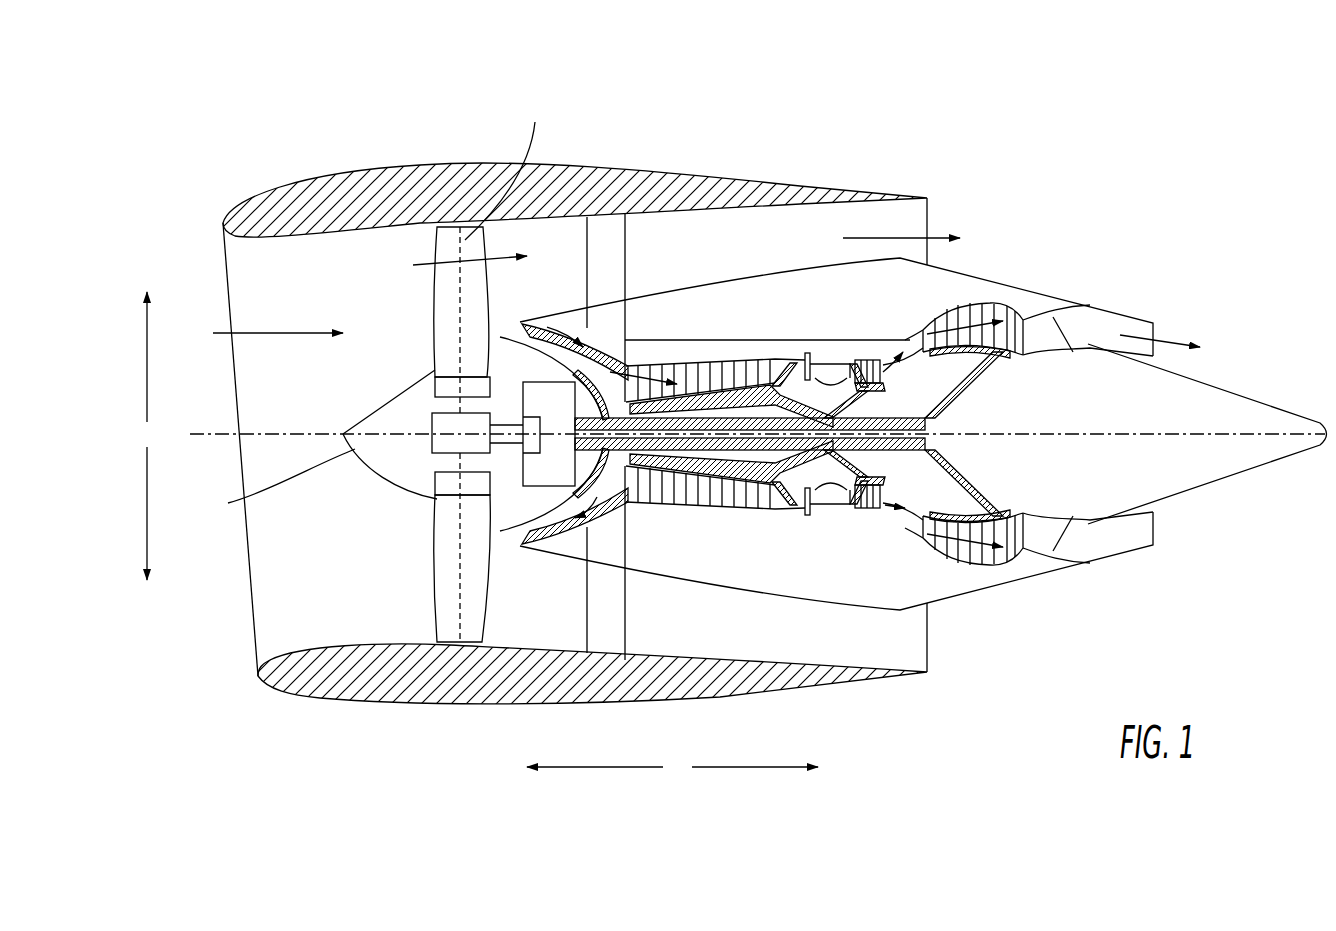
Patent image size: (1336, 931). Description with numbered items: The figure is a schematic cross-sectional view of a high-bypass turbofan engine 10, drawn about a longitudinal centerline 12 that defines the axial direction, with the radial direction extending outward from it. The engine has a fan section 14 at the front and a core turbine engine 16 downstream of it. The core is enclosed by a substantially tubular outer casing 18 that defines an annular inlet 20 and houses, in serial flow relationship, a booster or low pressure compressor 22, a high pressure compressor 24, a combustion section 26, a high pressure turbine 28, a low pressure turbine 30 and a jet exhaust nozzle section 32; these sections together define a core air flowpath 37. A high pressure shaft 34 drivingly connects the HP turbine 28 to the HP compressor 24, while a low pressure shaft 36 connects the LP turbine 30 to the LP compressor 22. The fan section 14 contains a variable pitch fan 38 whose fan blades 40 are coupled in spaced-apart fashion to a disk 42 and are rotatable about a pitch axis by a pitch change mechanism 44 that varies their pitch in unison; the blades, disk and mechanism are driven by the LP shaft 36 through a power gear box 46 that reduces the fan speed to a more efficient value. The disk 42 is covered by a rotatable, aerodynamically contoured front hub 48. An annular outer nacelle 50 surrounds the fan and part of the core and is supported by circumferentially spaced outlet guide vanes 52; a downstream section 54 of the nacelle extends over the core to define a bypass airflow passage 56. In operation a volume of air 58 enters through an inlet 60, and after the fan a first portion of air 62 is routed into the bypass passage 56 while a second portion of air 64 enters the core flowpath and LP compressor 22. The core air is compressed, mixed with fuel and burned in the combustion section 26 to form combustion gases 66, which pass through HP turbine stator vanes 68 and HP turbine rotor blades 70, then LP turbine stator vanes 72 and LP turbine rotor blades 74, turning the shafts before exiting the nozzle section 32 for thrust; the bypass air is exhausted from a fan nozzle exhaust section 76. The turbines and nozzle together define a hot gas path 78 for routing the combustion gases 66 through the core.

The turbofan engine 10 is at (1070, 178).
The longitudinal centerline 12 is at (1090, 432).
The fan section 14 is at (393, 250).
The core turbine engine 16 is at (745, 323).
The outer casing 18 is at (785, 598).
The annular inlet 20 is at (535, 537).
The low pressure compressor 22 is at (575, 492).
The high pressure compressor 24 is at (653, 487).
The combustion section 26 is at (825, 497).
The high pressure turbine 28 is at (923, 502).
The low pressure turbine 30 is at (1008, 558).
The jet exhaust nozzle section 32 is at (1068, 540).
The high pressure shaft 34 is at (823, 408).
The low pressure shaft 36 is at (923, 413).
The core air flowpath 37 is at (615, 493).
The variable pitch fan 38 is at (400, 488).
The fan blades 40 is at (433, 583).
The disk 42 is at (447, 387).
The pitch change mechanism 44 is at (430, 414).
The power gear box 46 is at (557, 398).
The front hub 48 is at (276, 487).
The outer nacelle 50 is at (480, 706).
The outlet guide vanes 52 is at (623, 240).
The downstream section of the nacelle 54 is at (867, 187).
The bypass airflow passage 56 is at (798, 254).
The volume of air 58 is at (273, 332).
The inlet 60 is at (252, 648).
The first portion of air 62 is at (448, 270).
The second portion of air 64 is at (517, 326).
The combustion gases 66 is at (877, 373).
The HP turbine stator vanes 68 is at (843, 500).
The HP turbine rotor blades 70 is at (930, 464).
The LP turbine stator vanes 72 is at (933, 543).
The LP turbine rotor blades 74 is at (943, 550).
The fan nozzle exhaust section 76 is at (913, 222).
The hot gas path 78 is at (723, 340).